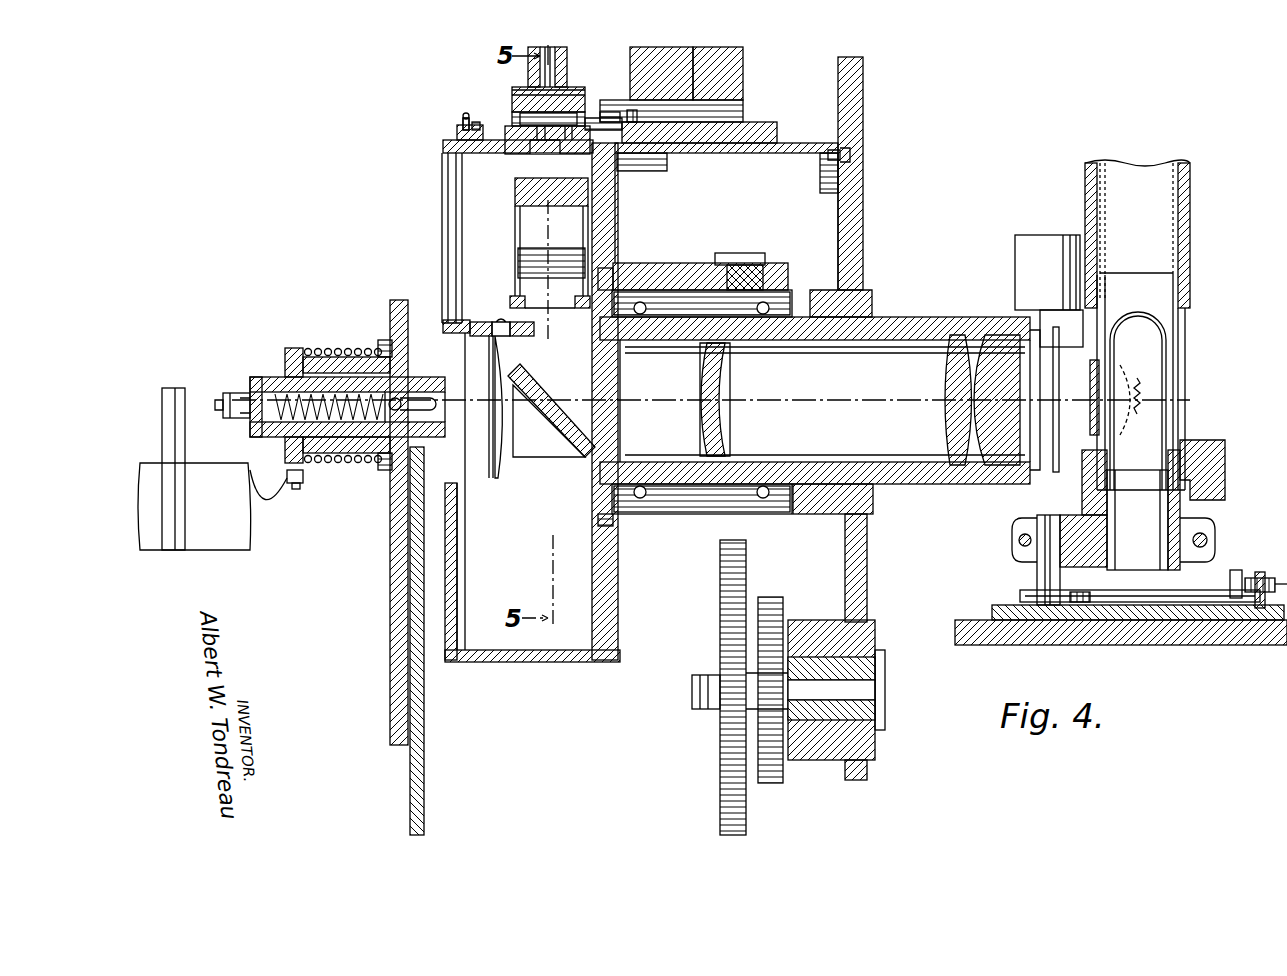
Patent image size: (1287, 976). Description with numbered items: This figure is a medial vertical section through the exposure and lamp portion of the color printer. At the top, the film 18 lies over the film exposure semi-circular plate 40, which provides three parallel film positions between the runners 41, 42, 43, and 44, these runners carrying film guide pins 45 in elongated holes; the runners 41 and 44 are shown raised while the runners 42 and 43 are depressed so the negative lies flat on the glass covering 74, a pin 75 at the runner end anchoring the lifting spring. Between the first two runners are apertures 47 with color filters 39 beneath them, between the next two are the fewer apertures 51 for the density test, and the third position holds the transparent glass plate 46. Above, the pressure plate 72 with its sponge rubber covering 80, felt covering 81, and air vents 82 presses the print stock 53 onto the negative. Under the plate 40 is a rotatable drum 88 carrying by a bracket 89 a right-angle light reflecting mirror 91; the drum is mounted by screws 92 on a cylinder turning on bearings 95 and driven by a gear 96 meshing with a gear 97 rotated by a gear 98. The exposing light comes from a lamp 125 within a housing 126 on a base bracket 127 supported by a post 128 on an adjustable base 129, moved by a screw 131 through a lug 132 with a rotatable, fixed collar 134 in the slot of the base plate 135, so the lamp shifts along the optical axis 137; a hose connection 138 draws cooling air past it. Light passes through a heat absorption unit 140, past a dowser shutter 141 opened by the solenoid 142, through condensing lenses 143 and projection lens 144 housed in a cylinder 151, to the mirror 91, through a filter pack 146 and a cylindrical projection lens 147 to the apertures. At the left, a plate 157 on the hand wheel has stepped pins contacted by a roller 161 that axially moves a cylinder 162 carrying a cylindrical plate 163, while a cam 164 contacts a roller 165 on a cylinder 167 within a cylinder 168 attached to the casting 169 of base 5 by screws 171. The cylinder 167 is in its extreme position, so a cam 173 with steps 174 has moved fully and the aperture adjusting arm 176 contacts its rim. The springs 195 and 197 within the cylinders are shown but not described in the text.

The base 5 is at (424, 772).
The film 18 is at (520, 118).
The color filters 39 is at (470, 154).
The film exposure semi-circular plate 40 is at (773, 118).
The runner 41 is at (462, 125).
The runner 42 is at (508, 153).
The runner 43 is at (622, 157).
The runner 44 is at (636, 120).
The film guide pins 45 is at (632, 110).
The transparent glass plate 46 is at (604, 118).
The apertures 47 is at (457, 141).
The apertures 51 is at (565, 144).
The print stock 53 is at (532, 150).
The pressure plate 72 is at (606, 96).
The glass covering 74 is at (545, 150).
The pin 75 is at (568, 56).
The sponge rubber covering 80 is at (514, 114).
The felt covering 81 is at (601, 96).
The air vents 82 is at (514, 94).
The rotatable drum 88 is at (519, 674).
The bracket 89 is at (552, 455).
The right-angle light reflecting mirror 91 is at (522, 368).
The screws 92 is at (612, 272).
The bearings 95 is at (645, 316).
The gear 96 is at (735, 253).
The gear 97 is at (720, 626).
The gear 98 is at (770, 783).
The lamp 125 is at (1168, 344).
The housing 126 is at (1185, 380).
The base bracket 127 is at (1165, 566).
The post 128 is at (1037, 573).
The adjustable base 129 is at (1203, 620).
The screw 131 is at (1255, 578).
The lug 132 is at (1236, 570).
The rotatable fixed collar 134 is at (1248, 620).
The base plate 135 is at (1262, 608).
The optical axis 137 is at (856, 402).
The hose connection 138 is at (1190, 232).
The heat absorption unit 140 is at (1110, 424).
The dowser shutter 141 is at (1100, 378).
The solenoid 142 is at (1015, 267).
The condensing lenses 143 is at (995, 432).
The projection lens 144 is at (728, 419).
The filter pack 146 is at (614, 246).
The cylindrical projection lens 147 is at (515, 196).
The cylinder 151 is at (903, 325).
The plate 157 is at (170, 390).
The roller 161 is at (226, 408).
The cylinder 162 is at (272, 380).
The cylindrical plate 163 is at (489, 480).
The cam 164 is at (260, 466).
The roller 165 is at (303, 478).
The cylinder 167 is at (356, 440).
The cylinder 168 is at (348, 357).
The casting 169 is at (390, 556).
The screws 171 is at (395, 350).
The cam 173 is at (508, 480).
The steps 174 is at (492, 318).
The aperture adjusting arm 176 is at (534, 332).
The spring 195 is at (320, 348).
The spring 197 is at (284, 392).